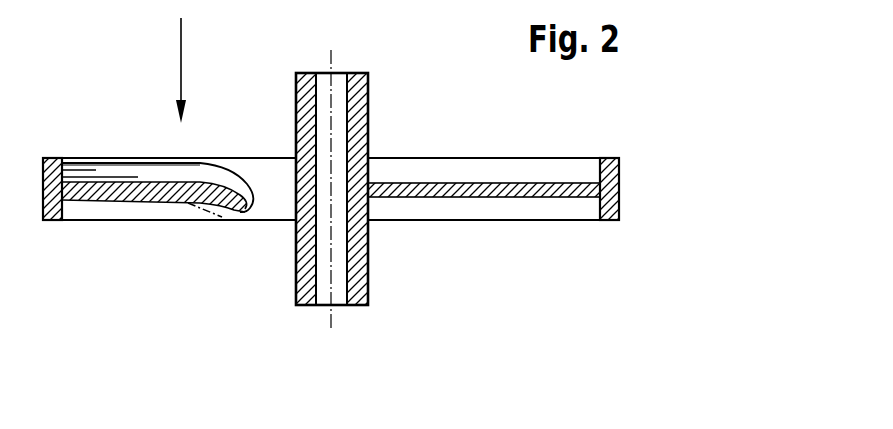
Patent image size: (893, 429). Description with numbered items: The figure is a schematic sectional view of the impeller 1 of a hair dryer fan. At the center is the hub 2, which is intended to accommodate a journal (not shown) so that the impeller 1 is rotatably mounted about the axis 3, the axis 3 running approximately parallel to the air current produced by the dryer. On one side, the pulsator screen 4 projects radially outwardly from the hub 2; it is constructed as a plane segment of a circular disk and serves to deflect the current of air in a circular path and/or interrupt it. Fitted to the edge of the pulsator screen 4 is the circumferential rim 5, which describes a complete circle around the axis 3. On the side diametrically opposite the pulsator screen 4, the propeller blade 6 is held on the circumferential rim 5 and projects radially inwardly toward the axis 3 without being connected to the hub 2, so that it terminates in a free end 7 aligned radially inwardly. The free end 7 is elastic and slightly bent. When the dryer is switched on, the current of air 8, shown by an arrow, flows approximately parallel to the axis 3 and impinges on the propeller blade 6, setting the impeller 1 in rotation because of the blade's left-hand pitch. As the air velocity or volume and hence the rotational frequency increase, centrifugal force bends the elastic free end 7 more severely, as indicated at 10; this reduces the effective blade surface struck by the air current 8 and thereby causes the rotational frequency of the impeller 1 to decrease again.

The impeller 1 is at (383, 243).
The hub 2 is at (298, 284).
The axis 3 is at (346, 150).
The pulsator screen 4 is at (436, 188).
The circumferential rim 5 is at (607, 165).
The propeller blade 6 is at (85, 183).
The free end 7 is at (241, 159).
The current of air 8 is at (179, 47).
The severer bend of the free end 10 is at (232, 240).